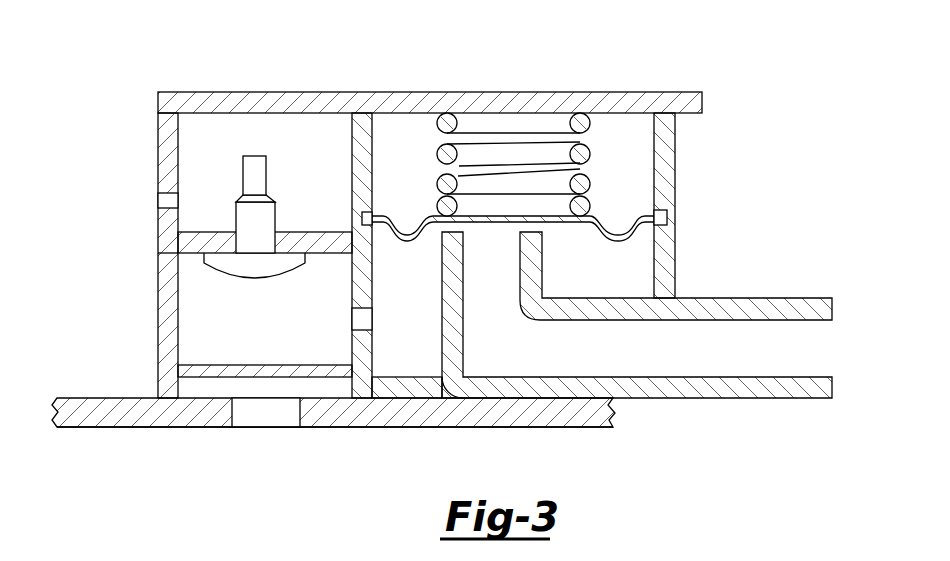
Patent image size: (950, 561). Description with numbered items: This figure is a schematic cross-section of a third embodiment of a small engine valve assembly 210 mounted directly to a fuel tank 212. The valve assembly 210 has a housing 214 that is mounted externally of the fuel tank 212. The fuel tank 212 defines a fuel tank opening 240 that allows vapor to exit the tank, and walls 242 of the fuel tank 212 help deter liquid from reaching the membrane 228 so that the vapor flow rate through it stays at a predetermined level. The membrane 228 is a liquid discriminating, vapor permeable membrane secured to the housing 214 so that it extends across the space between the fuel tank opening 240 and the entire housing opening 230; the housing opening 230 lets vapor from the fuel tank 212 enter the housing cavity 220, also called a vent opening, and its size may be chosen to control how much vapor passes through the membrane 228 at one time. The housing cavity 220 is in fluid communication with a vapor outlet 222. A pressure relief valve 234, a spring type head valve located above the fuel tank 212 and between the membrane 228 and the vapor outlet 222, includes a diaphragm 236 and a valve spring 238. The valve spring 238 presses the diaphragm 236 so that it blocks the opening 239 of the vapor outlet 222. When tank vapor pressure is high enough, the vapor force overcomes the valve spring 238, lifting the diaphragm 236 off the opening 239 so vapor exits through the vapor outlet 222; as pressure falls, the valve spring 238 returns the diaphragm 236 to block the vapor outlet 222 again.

The valve assembly 210 is at (116, 87).
The fuel tank 212 is at (82, 397).
The housing 214 is at (158, 290).
The housing cavity 220 is at (418, 287).
The vapor outlet 222 is at (778, 360).
The membrane 228 is at (265, 365).
The housing opening 230 is at (365, 328).
The pressure relief valve 234 is at (611, 128).
The diaphragm 236 is at (575, 223).
The valve spring 238 is at (517, 157).
The opening of the vapor outlet 239 is at (520, 262).
The fuel tank opening 240 is at (263, 416).
The walls 242 is at (148, 428).